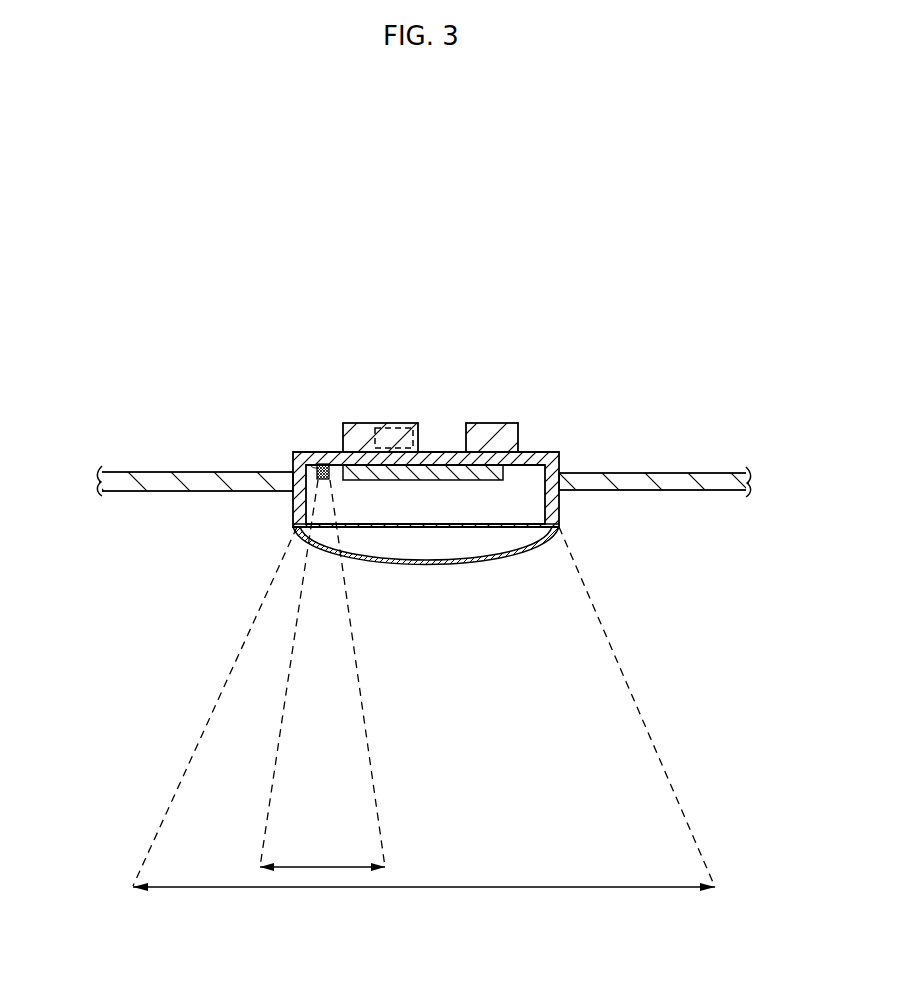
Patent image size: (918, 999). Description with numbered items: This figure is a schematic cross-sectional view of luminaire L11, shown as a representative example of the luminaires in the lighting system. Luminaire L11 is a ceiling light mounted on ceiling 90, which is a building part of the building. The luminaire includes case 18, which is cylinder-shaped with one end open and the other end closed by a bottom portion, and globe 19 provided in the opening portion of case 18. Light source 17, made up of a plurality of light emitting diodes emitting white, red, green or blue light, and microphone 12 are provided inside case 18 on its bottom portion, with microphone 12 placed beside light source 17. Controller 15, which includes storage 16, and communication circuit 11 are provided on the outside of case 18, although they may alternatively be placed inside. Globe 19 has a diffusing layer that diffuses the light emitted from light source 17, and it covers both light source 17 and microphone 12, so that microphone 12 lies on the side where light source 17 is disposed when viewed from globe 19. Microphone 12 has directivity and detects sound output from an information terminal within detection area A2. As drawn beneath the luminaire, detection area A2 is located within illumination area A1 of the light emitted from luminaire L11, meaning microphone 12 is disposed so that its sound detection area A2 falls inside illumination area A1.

The luminaire L11 is at (291, 450).
The microphone 12 is at (316, 462).
The controller 15 is at (363, 422).
The storage 16 is at (400, 427).
The communication circuit 11 is at (478, 422).
The light source 17 is at (505, 472).
The case 18 is at (560, 508).
The ceiling 90 is at (660, 474).
The globe 19 is at (530, 547).
The illumination area A1 is at (424, 709).
The detection area A2 is at (322, 675).